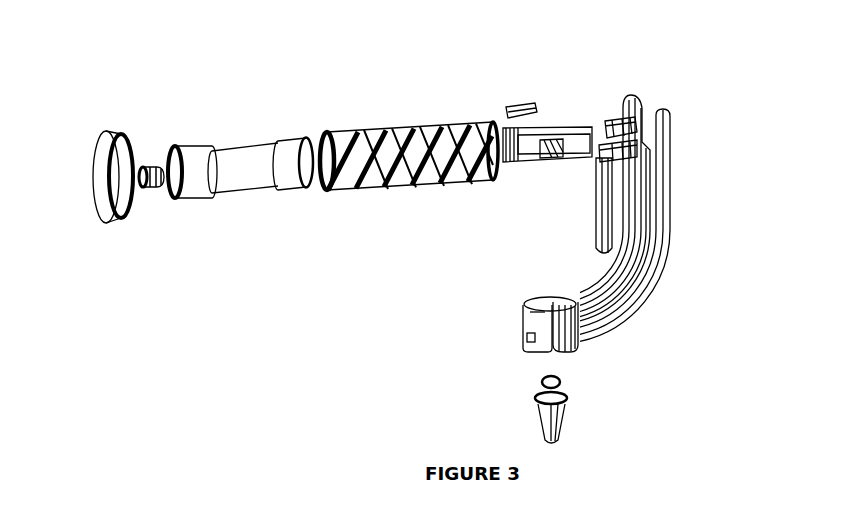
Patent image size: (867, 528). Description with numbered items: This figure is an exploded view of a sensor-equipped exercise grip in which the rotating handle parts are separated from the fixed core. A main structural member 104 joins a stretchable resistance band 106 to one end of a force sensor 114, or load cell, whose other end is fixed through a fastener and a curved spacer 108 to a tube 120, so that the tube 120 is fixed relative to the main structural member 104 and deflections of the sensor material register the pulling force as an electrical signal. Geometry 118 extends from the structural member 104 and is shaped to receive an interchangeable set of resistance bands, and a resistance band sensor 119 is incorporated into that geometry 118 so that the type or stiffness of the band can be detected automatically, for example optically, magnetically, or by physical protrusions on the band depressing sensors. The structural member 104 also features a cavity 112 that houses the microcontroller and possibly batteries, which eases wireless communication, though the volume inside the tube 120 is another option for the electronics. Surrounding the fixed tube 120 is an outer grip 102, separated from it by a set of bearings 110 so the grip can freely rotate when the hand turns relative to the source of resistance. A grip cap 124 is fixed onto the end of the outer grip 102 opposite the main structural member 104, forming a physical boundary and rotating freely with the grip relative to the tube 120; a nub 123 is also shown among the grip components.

The outer grip 102 is at (385, 125).
The main structural member 104 is at (653, 206).
The resistance band 106 is at (555, 441).
The curved spacer 108 is at (540, 104).
The bearings 110 is at (280, 190).
The cavity 112 is at (633, 206).
The force sensor 114 is at (567, 160).
The geometry 118 is at (523, 328).
The resistance band sensor 119 is at (523, 342).
The tube 120 is at (253, 143).
The nub 123 is at (160, 170).
The grip cap 124 is at (108, 180).